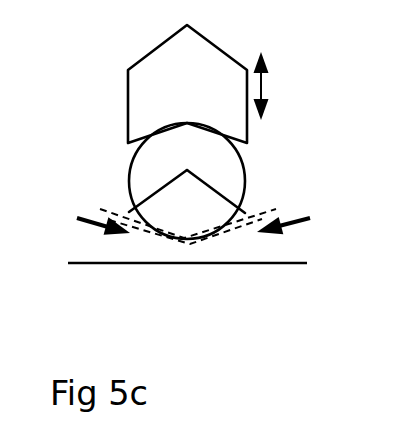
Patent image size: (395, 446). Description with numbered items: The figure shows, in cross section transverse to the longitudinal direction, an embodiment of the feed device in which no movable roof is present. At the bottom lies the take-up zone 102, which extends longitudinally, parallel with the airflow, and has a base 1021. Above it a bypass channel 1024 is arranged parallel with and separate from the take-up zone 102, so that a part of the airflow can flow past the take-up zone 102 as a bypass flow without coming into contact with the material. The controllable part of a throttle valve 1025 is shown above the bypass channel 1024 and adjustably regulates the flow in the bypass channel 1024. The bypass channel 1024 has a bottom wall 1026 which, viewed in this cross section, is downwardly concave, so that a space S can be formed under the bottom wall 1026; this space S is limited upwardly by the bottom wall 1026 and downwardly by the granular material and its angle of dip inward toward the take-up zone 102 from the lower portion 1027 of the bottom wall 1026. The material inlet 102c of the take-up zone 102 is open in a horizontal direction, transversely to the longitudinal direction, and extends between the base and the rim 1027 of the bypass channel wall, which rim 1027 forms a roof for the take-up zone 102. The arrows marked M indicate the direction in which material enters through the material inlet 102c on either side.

The throttle valve 1025 is at (217, 97).
The bypass channel 1024 is at (203, 146).
The bottom wall 1026 is at (162, 186).
The rim of the wall 1027 is at (243, 209).
The take-up zone 102 is at (227, 247).
The base 1021 is at (203, 265).
The material inlet 102c is at (122, 245).
The space S is at (241, 224).
The movement direction M is at (187, 217).